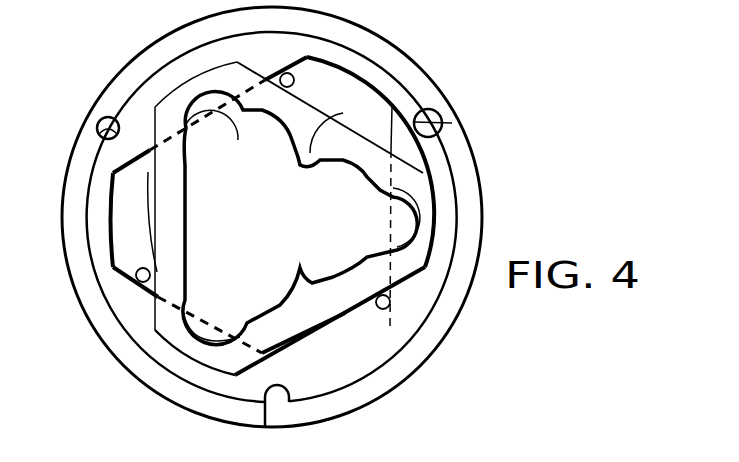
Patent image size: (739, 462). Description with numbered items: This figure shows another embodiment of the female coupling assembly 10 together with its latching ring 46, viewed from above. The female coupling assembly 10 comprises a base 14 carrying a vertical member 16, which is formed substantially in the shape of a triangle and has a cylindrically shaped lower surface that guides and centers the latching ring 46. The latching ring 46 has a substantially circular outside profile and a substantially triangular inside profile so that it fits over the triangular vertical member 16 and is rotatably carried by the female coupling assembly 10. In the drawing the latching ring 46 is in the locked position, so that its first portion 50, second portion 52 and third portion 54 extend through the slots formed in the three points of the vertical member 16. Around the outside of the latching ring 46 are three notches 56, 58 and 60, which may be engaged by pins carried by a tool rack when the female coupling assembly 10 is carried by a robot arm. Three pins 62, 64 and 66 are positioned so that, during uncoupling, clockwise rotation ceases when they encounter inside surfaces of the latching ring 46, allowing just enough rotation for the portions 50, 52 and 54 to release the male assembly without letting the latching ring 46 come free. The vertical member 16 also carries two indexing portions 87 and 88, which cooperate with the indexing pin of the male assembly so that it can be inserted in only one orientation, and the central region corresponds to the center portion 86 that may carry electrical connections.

The female coupling assembly 10 is at (66, 80).
The base 14 is at (388, 47).
The vertical member 16 is at (436, 196).
The latching ring 46 is at (437, 298).
The first portion 50 is at (241, 125).
The second portion 52 is at (397, 218).
The third portion 54 is at (214, 336).
The notch 56 is at (452, 123).
The notch 58 is at (268, 428).
The notch 60 is at (100, 134).
The pin 62 is at (296, 76).
The pin 64 is at (145, 268).
The pin 66 is at (377, 312).
The center portion 86 is at (262, 213).
The indexing portion 87 is at (343, 119).
The indexing portion 88 is at (304, 276).